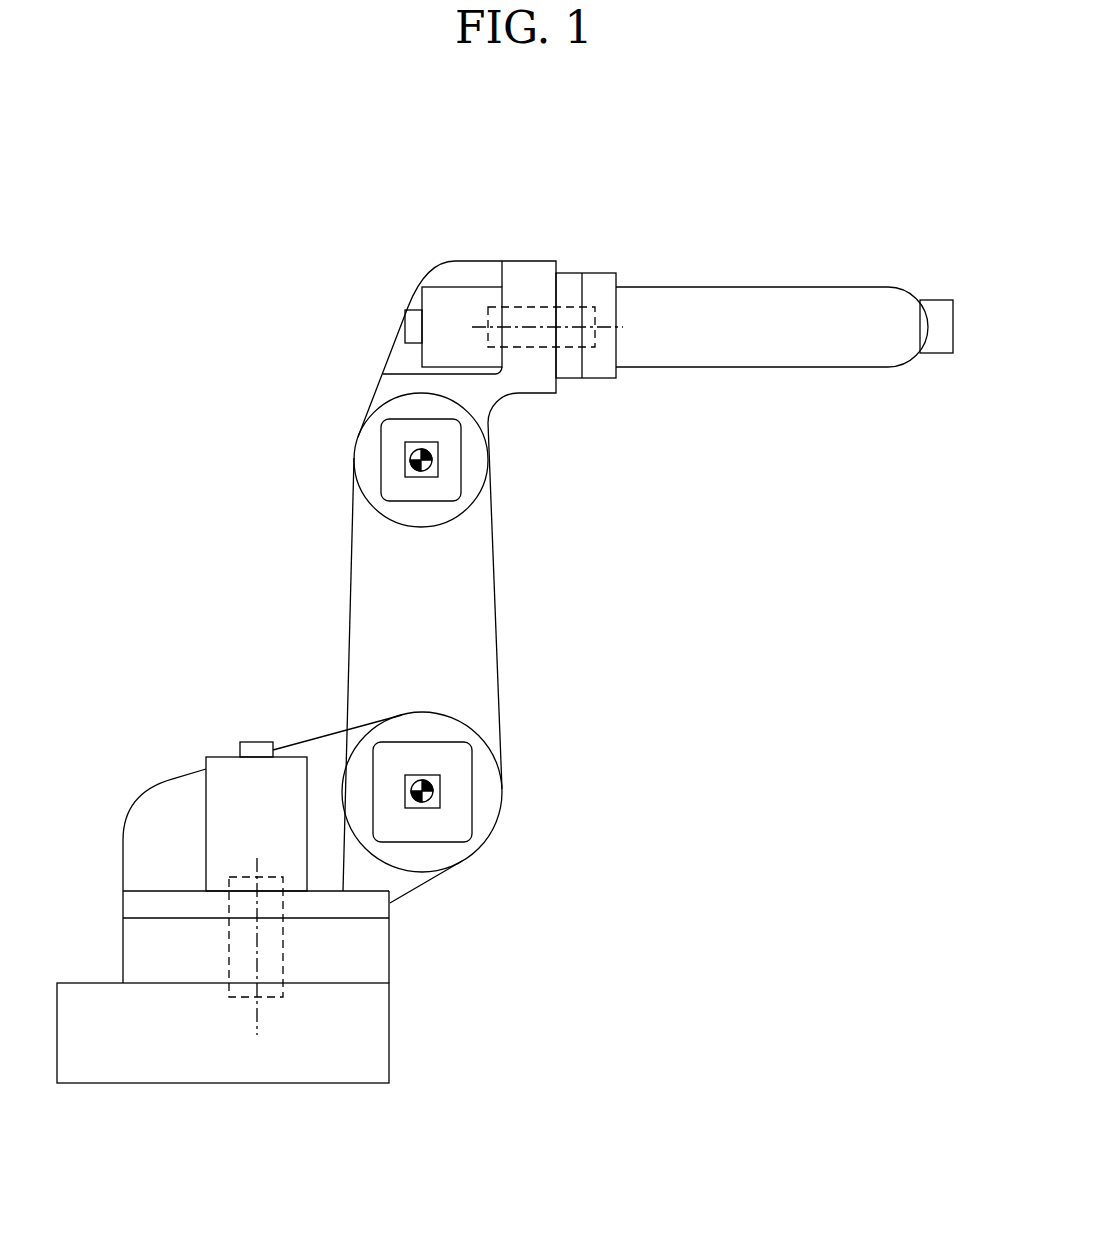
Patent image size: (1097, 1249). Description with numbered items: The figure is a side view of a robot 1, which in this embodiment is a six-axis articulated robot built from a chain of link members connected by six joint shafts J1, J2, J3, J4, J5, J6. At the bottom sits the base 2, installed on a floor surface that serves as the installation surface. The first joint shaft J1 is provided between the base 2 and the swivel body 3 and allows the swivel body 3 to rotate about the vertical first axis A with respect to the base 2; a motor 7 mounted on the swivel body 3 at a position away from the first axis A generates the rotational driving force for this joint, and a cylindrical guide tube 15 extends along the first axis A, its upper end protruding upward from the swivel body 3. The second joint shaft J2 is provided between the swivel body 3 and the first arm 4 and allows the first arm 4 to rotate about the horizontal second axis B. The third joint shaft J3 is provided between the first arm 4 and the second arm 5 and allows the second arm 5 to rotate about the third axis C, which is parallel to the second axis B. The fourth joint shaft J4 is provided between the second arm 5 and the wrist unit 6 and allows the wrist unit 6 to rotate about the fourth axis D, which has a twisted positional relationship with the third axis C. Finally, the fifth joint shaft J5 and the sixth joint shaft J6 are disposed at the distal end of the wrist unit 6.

The robot 1 is at (243, 200).
The base 2 is at (390, 1024).
The swivel body 3 is at (122, 857).
The first arm 4 is at (495, 626).
The second arm 5 is at (438, 264).
The wrist unit 6 is at (703, 268).
The motor 7 is at (218, 756).
The guide tube 15 is at (284, 949).
The first axis A is at (258, 1020).
The second axis B is at (431, 792).
The third axis C is at (431, 459).
The fourth axis D is at (603, 325).
The first joint shaft J1 is at (160, 840).
The second joint shaft J2 is at (545, 773).
The third joint shaft J3 is at (338, 384).
The fourth joint shaft J4 is at (568, 240).
The fifth joint shaft J5 is at (909, 390).
The sixth joint shaft J6 is at (963, 308).